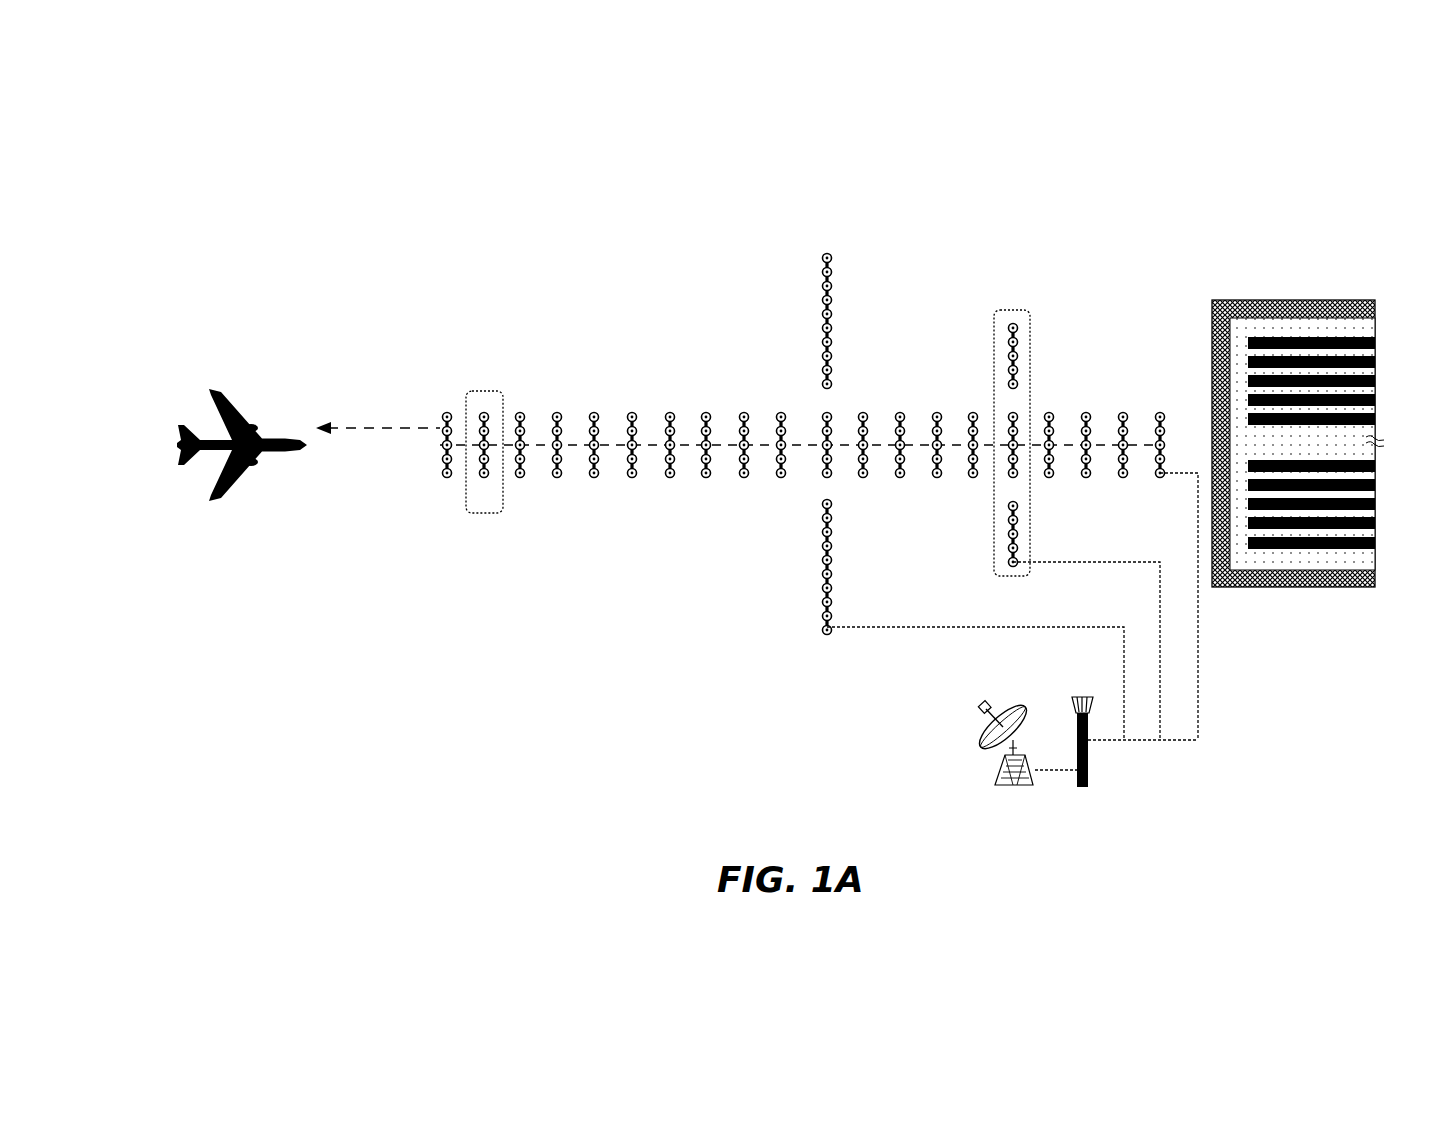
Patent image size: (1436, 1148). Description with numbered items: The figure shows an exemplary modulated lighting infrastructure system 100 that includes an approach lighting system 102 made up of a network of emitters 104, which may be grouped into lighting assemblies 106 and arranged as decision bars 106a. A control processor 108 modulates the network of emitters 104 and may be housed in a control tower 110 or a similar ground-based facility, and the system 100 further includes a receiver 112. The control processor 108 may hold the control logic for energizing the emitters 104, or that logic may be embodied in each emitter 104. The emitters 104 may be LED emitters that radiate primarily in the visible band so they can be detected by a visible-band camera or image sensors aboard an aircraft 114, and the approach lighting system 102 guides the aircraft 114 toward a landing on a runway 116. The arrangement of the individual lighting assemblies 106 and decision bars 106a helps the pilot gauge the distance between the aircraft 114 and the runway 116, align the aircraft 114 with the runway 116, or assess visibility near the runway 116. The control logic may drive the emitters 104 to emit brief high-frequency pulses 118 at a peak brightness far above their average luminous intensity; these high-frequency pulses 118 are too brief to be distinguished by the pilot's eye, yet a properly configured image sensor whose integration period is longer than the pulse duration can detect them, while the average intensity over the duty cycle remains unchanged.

The modulated lighting infrastructure system 100 is at (219, 187).
The approach lighting system 102 is at (1188, 240).
The emitters 104 is at (445, 477).
The lighting assemblies 106 is at (490, 391).
The decision bars 106a is at (1013, 310).
The control processor 108 is at (1085, 787).
The control tower 110 is at (1082, 698).
The receiver 112 is at (1005, 785).
The aircraft 114 is at (230, 408).
The runway 116 is at (1212, 358).
The high-frequency pulses 118 is at (340, 428).